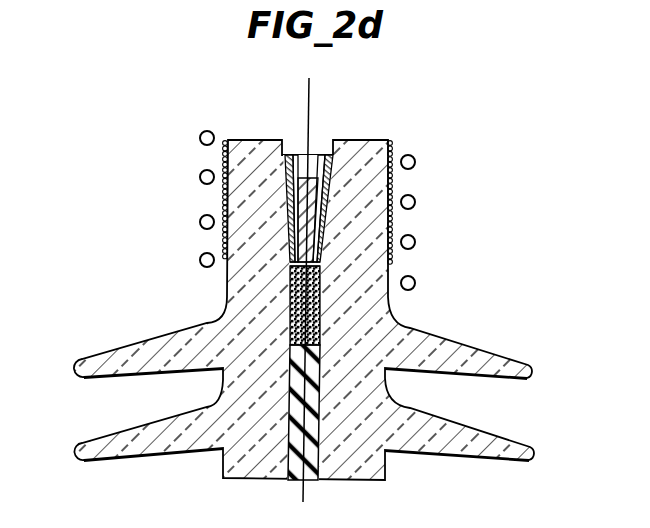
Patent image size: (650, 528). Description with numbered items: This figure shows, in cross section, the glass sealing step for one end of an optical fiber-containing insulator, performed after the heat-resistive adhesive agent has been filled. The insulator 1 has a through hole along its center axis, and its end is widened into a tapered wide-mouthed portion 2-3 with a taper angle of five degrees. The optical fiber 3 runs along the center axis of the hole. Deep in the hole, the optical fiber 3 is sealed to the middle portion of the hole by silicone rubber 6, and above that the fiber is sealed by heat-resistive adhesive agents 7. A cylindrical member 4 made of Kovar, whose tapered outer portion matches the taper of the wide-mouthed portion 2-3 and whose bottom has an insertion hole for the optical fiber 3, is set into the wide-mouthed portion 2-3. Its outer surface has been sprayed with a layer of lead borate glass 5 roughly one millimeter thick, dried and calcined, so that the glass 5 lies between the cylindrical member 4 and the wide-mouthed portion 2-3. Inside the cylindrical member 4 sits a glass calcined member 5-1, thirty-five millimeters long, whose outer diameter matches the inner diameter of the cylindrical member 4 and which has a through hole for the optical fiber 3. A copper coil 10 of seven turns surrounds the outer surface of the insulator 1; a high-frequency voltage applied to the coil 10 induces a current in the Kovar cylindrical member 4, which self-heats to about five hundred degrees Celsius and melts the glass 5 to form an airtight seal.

The insulator 1 is at (422, 350).
The wide-mouthed portion 2-3 is at (333, 197).
The optical fiber 3 is at (310, 113).
The cylindrical member 4 is at (333, 154).
The glass 5 is at (236, 201).
The glass calcined member 5-1 is at (313, 234).
The silicone rubber 6 is at (312, 422).
The adhesive agents 7 is at (313, 311).
The coil 10 is at (415, 202).